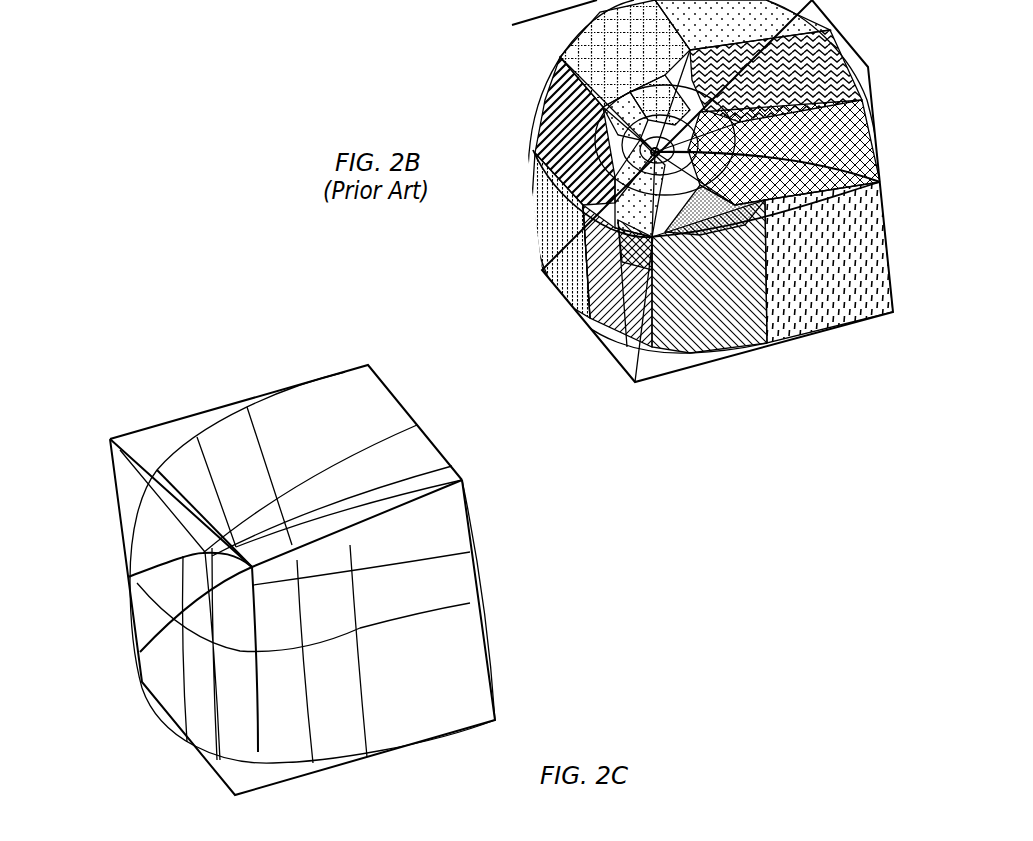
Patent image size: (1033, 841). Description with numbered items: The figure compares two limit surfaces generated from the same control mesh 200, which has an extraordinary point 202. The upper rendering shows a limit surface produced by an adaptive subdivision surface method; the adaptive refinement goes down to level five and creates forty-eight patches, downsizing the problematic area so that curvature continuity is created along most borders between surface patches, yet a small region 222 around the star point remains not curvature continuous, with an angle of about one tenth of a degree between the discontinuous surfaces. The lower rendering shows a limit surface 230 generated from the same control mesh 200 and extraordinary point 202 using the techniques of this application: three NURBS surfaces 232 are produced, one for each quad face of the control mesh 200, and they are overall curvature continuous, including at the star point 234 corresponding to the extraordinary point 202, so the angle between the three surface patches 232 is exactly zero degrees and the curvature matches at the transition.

In FIG. 2B, the control mesh 200 is at (513, 88).
In FIG. 2C, the control mesh 200 is at (148, 422).
In FIG. 2B, the small region 222 is at (880, 182).
In FIG. 2C, the limit surface 230 is at (212, 386).
In FIG. 2C, the NURBS surfaces 232 is at (371, 396).
In FIG. 2C, the extraordinary point 202 is at (128, 576).
In FIG. 2C, the star point 234 is at (145, 648).